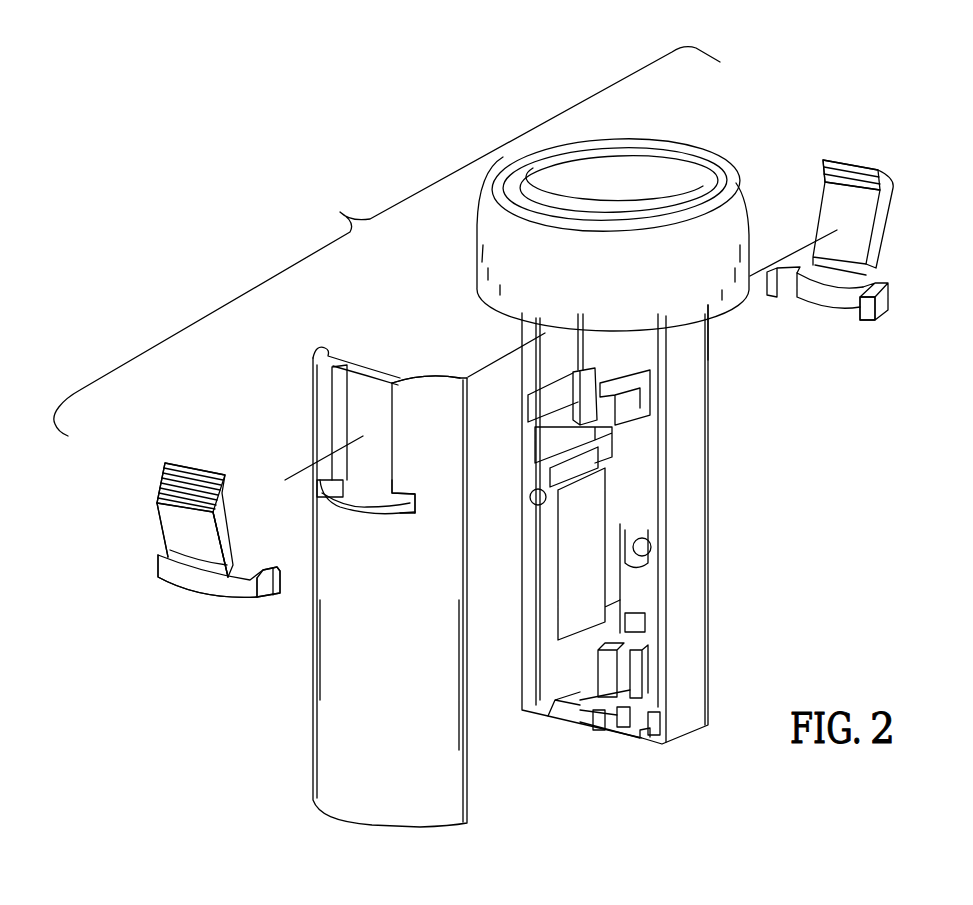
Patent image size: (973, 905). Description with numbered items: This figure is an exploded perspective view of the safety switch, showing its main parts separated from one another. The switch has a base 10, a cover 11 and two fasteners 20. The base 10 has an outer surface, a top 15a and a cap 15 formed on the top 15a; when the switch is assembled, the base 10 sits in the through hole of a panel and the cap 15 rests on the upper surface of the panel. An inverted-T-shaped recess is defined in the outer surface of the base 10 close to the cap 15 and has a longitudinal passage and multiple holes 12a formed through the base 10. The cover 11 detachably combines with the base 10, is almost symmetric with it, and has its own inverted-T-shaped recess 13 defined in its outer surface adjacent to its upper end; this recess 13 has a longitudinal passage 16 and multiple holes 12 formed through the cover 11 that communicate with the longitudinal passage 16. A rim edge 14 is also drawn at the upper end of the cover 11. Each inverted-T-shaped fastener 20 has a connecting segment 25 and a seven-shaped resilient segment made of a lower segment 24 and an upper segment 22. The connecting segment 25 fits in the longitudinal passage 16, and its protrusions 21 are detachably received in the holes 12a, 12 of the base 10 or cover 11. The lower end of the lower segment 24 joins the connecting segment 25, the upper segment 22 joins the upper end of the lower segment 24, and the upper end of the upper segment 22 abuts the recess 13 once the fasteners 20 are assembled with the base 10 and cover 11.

The base 10 is at (697, 548).
The cover 11 is at (333, 718).
The holes 12 is at (372, 500).
The holes 12a is at (600, 393).
The recess 13 is at (373, 390).
The rim edge 14 is at (413, 383).
The cap 15 is at (678, 155).
The top 15a is at (703, 333).
The longitudinal passage 16 is at (373, 507).
The fastener 20 is at (160, 462).
The protrusions 21 is at (278, 595).
The upper segment 22 is at (157, 503).
The lower segment 24 is at (176, 528).
The connecting segment 25 is at (200, 583).